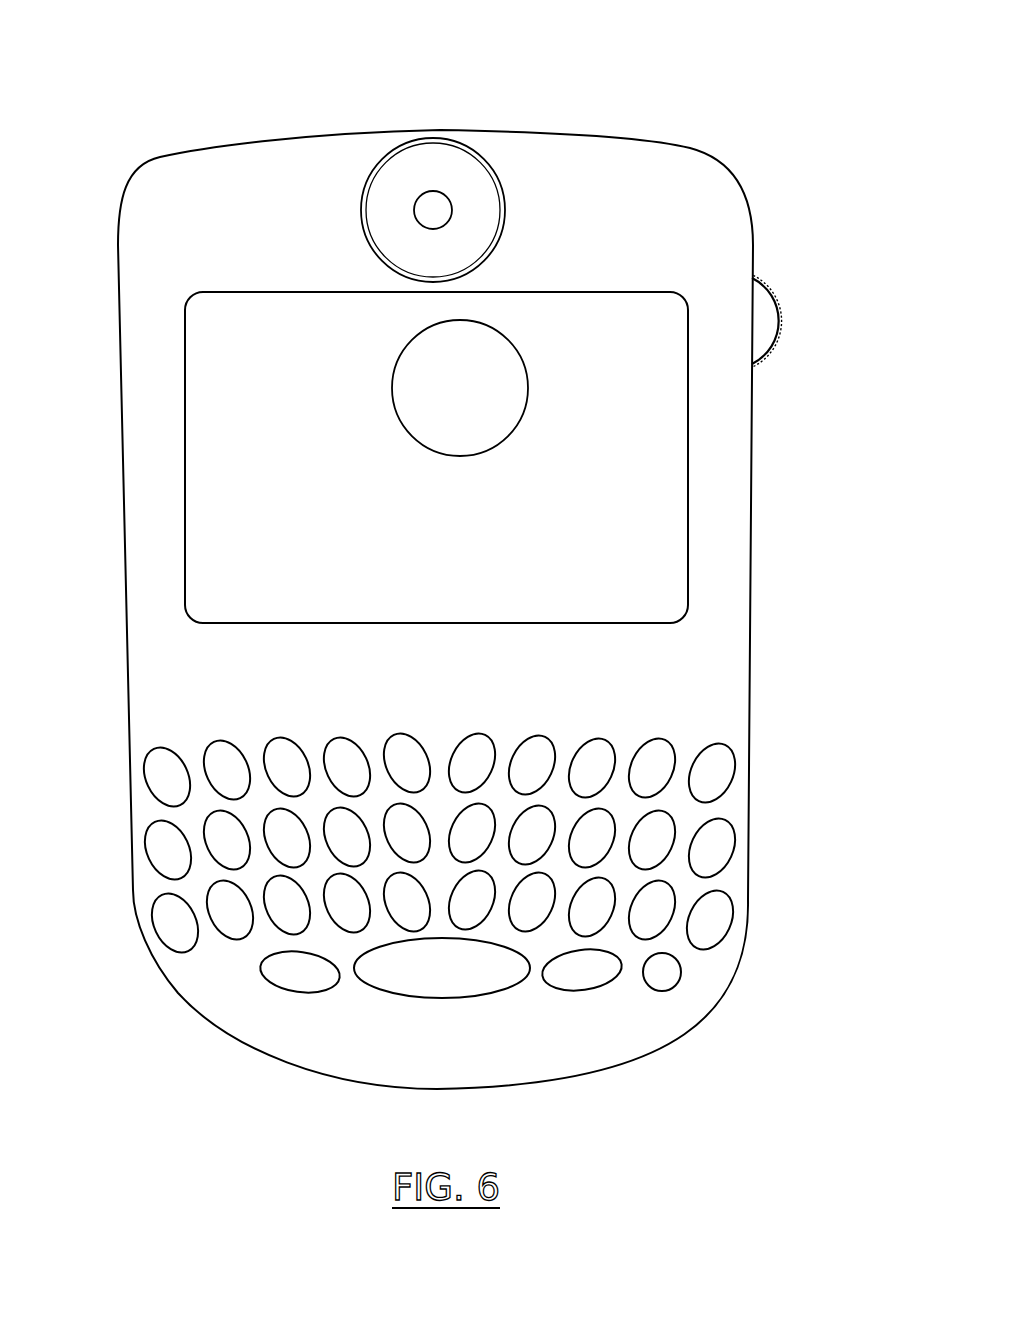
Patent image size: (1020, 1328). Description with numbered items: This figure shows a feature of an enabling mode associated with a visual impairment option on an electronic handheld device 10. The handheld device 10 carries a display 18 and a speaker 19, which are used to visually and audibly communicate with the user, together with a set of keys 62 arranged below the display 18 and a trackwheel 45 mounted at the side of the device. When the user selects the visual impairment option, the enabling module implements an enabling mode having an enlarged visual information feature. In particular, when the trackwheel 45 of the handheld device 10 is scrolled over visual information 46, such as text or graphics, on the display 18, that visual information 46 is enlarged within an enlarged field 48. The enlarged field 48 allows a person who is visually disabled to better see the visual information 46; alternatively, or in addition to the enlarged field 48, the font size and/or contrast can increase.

The electronic handheld device 10 is at (593, 105).
The display 18 is at (185, 375).
The speaker 19 is at (418, 178).
The trackwheel 45 is at (777, 347).
The visual information 46 is at (348, 417).
The enlarged field 48 is at (508, 340).
The keys 62 is at (180, 937).